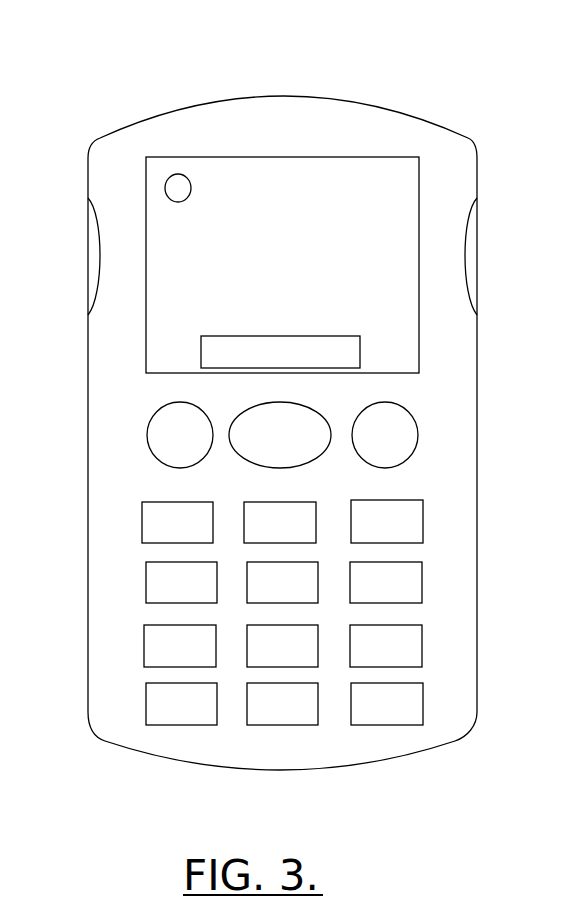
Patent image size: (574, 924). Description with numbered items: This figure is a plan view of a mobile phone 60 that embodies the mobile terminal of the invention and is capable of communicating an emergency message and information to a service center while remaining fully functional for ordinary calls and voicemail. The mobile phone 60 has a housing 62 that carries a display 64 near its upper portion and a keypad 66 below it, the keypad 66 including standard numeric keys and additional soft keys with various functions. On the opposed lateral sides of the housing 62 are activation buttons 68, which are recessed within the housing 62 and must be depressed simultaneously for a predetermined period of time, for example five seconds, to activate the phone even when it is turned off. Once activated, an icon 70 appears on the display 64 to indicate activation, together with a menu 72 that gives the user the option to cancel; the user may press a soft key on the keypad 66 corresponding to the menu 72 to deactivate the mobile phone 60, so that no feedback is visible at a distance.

The mobile phone 60 is at (306, 62).
The housing 62 is at (242, 96).
The display 64 is at (375, 157).
The keypad 66 is at (422, 520).
The activation buttons 68 is at (97, 248).
The icon 70 is at (169, 175).
The menu 72 is at (361, 351).